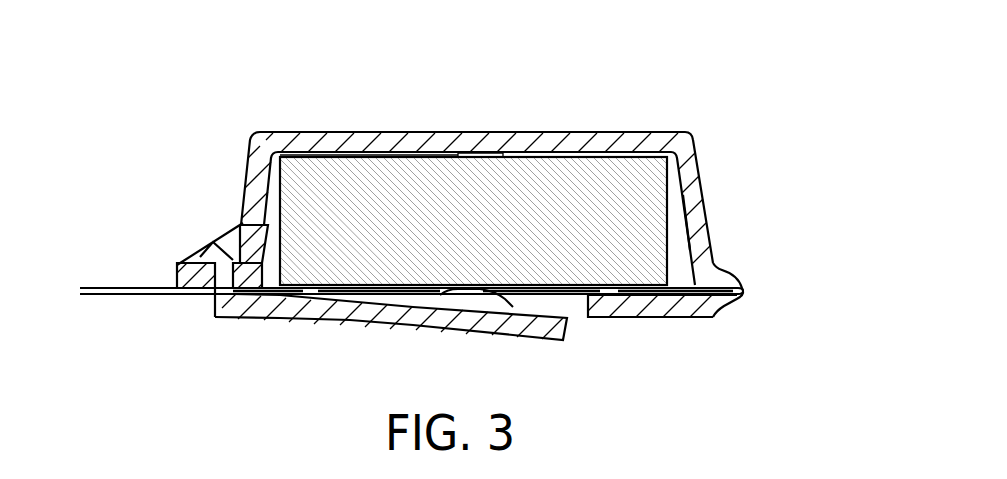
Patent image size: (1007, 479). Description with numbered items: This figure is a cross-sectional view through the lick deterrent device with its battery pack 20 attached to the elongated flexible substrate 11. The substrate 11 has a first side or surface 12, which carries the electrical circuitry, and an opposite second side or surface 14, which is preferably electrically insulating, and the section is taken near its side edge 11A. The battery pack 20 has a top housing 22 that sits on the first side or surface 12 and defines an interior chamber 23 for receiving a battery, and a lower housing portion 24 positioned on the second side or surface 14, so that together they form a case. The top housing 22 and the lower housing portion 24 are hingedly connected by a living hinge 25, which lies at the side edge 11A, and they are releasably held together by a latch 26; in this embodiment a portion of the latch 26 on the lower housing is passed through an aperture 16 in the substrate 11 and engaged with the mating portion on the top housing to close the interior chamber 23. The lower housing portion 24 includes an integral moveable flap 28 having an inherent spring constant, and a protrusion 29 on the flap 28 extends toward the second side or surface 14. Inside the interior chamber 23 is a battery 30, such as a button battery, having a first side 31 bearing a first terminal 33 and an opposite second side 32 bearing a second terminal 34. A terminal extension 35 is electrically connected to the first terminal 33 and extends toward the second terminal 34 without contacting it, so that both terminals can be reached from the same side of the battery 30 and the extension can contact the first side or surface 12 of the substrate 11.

The elongated flexible substrate 11 is at (137, 287).
The side edge 11A is at (743, 291).
The first side or surface 12 is at (107, 287).
The second side or surface 14 is at (115, 297).
The aperture 16 is at (212, 289).
The battery pack 20 is at (281, 120).
The top housing 22 is at (697, 170).
The interior chamber 23 is at (697, 242).
The lower housing portion 24 is at (680, 318).
The living hinge 25 is at (743, 282).
The latch 26 is at (205, 242).
The moveable flap 28 is at (427, 328).
The protrusion 29 is at (455, 292).
The battery 30 is at (567, 140).
The first side 31 is at (408, 157).
The second side 32 is at (307, 293).
The first terminal 33 is at (380, 157).
The second terminal 34 is at (615, 288).
The terminal extension 35 is at (490, 153).